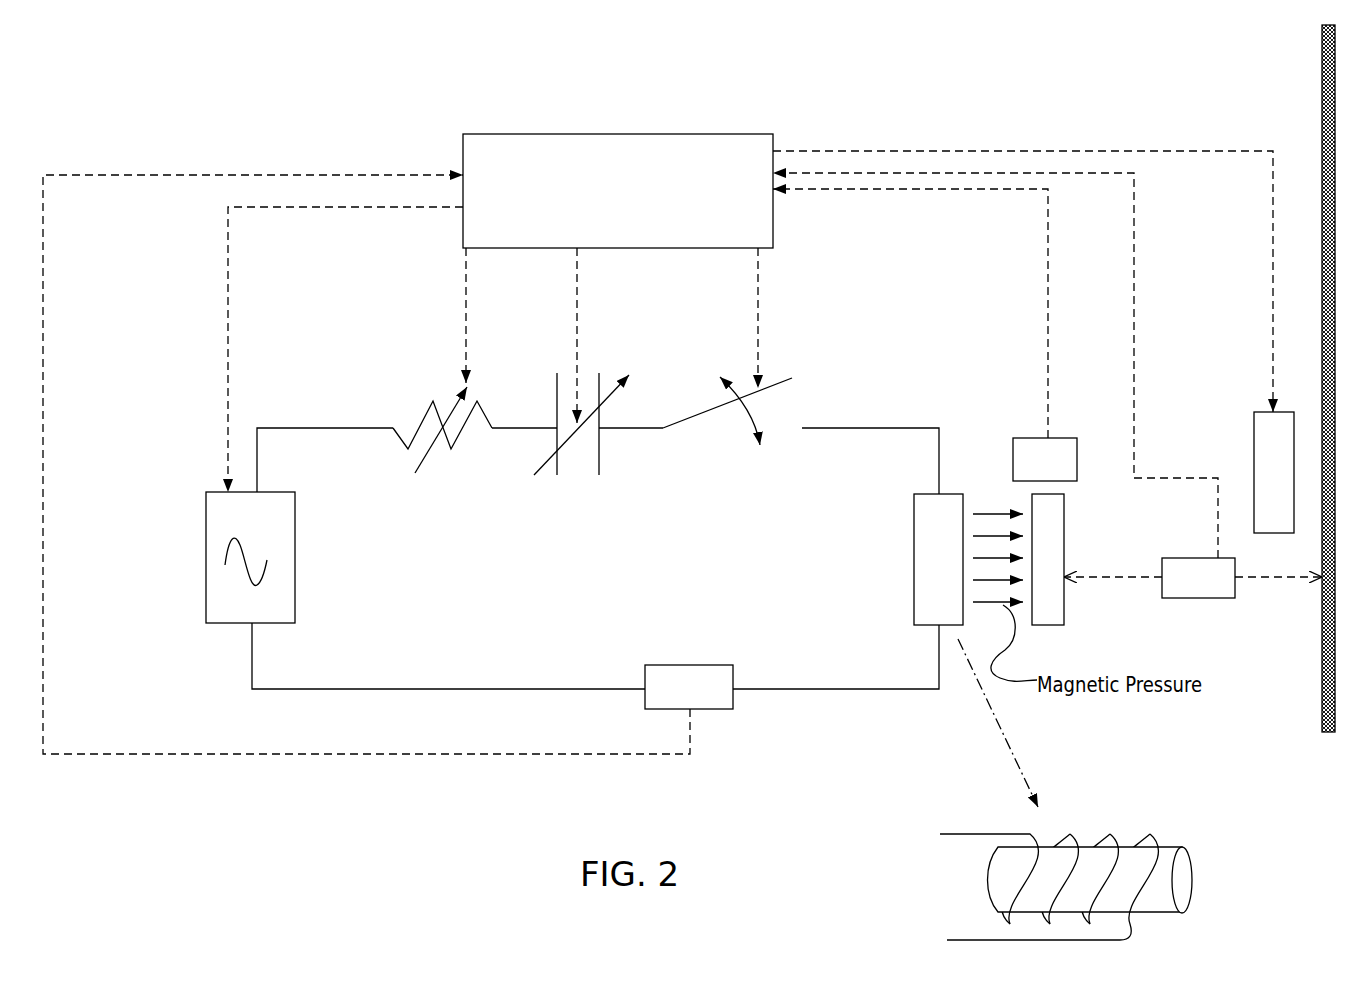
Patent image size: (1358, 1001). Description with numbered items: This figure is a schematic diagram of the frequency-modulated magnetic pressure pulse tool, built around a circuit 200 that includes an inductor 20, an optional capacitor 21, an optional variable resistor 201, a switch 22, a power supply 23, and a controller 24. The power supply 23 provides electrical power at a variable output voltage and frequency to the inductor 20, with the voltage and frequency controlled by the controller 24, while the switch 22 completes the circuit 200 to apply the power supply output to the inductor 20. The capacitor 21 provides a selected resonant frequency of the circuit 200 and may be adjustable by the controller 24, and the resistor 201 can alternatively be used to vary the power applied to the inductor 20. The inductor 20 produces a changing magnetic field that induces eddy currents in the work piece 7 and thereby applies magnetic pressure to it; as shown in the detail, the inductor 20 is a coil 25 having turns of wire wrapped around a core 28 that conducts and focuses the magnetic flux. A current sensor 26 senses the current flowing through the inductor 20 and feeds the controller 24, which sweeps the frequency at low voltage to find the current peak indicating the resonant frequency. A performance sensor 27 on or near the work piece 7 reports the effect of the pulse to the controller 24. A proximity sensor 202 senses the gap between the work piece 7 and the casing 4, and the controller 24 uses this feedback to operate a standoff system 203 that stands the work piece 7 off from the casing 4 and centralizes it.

The controller 24 is at (677, 203).
The circuit 200 is at (252, 667).
The variable resistor 201 is at (423, 417).
The capacitor 21 is at (598, 460).
The switch 22 is at (712, 408).
The power supply 23 is at (215, 545).
The current sensor 26 is at (725, 702).
The performance sensor 27 is at (1025, 447).
The inductor 20 is at (930, 535).
The coil 25 is at (1120, 858).
The core 28 is at (1184, 876).
The work piece 7 is at (1045, 560).
The proximity sensor 202 is at (1212, 590).
The standoff system 203 is at (1263, 423).
The casing 4 is at (1327, 732).